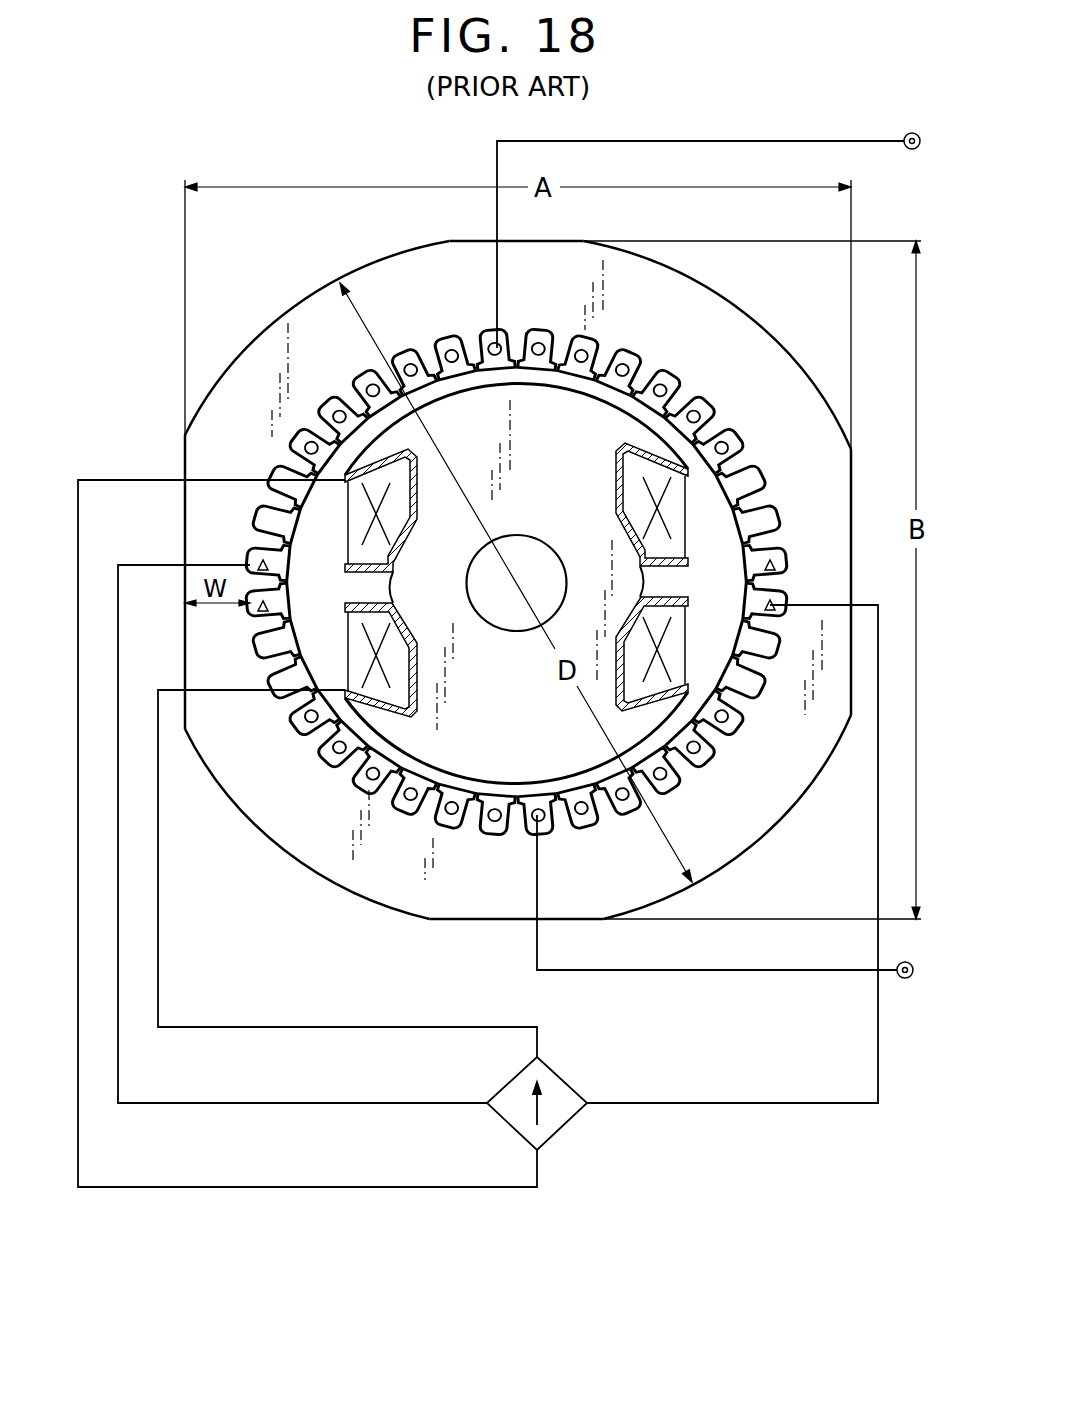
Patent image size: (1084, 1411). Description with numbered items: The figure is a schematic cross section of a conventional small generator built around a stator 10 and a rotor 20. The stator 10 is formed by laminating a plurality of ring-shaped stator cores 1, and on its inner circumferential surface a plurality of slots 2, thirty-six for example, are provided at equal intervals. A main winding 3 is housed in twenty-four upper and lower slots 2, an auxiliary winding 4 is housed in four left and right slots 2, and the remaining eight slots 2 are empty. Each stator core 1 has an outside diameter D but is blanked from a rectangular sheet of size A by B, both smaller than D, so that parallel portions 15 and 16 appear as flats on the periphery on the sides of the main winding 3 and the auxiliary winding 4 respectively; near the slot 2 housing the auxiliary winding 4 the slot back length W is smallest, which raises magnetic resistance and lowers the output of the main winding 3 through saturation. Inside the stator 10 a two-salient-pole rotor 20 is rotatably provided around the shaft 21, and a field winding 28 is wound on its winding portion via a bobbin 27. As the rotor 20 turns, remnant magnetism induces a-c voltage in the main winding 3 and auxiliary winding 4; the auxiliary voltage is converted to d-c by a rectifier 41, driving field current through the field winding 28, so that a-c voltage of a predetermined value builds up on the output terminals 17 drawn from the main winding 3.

The stator core 1 is at (437, 890).
The slot 2 is at (757, 482).
The main winding 3 is at (697, 418).
The auxiliary winding 4 is at (780, 566).
The stator 10 is at (290, 862).
The parallel portion 15 is at (548, 241).
The parallel portion 16 is at (851, 535).
The output terminal 17 is at (912, 150).
The rotor 20 is at (455, 750).
The shaft 21 is at (497, 612).
The bobbin 27 is at (665, 604).
The field winding 28 is at (672, 520).
The rectifier 41 is at (565, 1078).